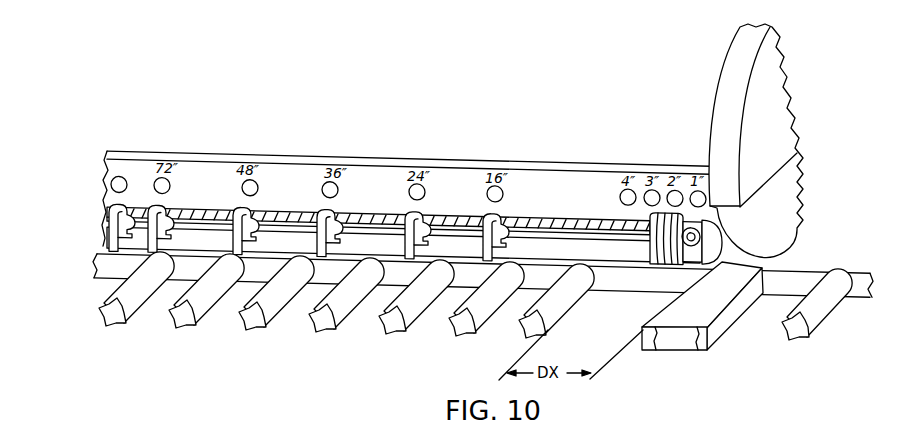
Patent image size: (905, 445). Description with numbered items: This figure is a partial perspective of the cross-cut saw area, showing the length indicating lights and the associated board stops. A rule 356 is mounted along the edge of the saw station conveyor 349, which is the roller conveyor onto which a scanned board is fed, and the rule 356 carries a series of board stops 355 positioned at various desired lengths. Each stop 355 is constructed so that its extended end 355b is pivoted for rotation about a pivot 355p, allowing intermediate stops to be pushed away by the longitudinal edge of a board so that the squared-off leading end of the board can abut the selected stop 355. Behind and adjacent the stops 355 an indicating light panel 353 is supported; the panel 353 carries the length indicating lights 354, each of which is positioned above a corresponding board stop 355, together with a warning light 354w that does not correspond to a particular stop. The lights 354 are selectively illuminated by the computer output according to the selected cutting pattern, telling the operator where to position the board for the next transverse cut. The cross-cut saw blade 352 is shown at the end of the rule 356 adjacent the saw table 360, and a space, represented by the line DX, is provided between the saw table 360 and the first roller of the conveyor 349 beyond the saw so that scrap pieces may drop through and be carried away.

The saw station conveyor 349 is at (527, 330).
The saw blade 352 is at (786, 228).
The indicating light panel 353 is at (203, 177).
The length indicating lights 354 is at (258, 181).
The warning light 354w is at (119, 177).
The board stop 355 is at (350, 154).
The extended end of stop 355b is at (398, 268).
The pivot 355p is at (428, 212).
The rule 356 is at (572, 221).
The saw table 360 is at (678, 347).